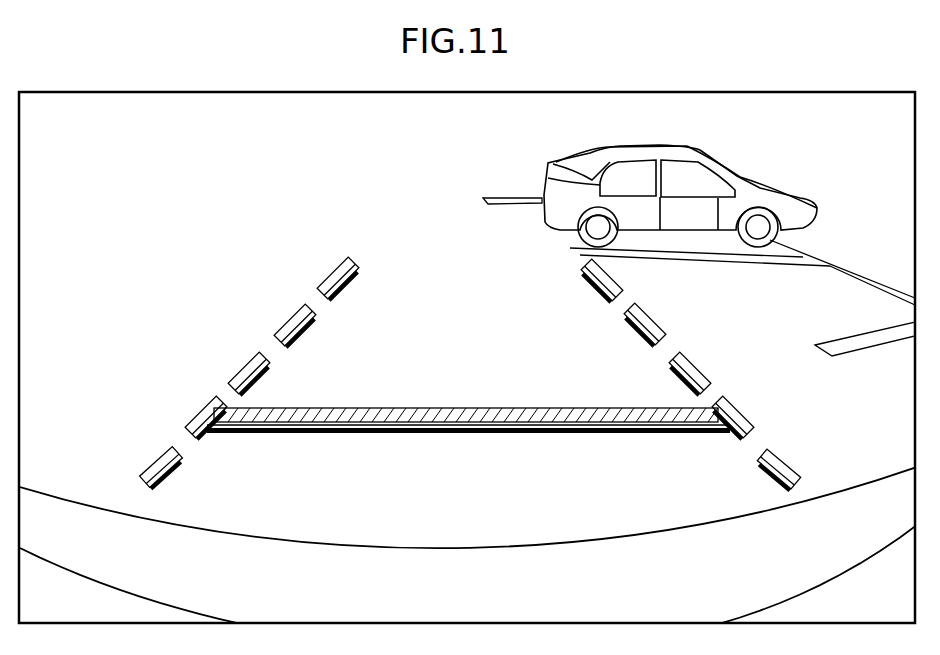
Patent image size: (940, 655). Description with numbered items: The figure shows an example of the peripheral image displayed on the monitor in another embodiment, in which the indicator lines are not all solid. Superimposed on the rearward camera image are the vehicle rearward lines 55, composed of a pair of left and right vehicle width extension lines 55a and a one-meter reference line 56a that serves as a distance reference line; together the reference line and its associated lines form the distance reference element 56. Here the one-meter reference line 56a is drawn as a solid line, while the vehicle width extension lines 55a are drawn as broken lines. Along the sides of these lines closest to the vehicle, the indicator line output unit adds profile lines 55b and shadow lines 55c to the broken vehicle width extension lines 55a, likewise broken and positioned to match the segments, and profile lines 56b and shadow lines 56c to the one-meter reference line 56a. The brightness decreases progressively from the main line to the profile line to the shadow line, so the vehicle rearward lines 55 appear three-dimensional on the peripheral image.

The vehicle rearward lines 55 is at (492, 360).
The vehicle width extension lines 55a is at (283, 336).
The profile lines 55b is at (297, 330).
The shadow lines 55c is at (310, 322).
The bar indicator 56 is at (468, 423).
The 1 m reference line 56a is at (490, 410).
The profile lines 56b is at (528, 430).
The shadow lines 56c is at (433, 432).